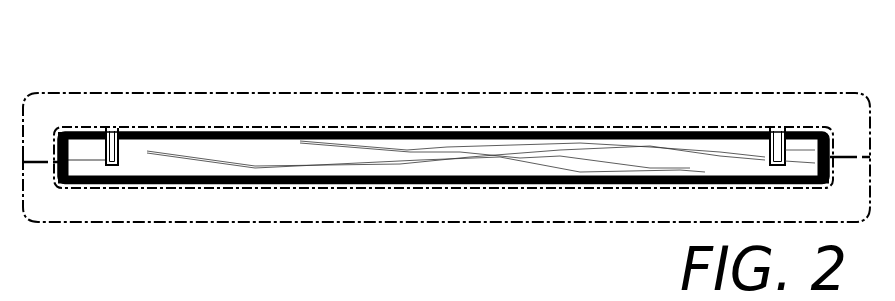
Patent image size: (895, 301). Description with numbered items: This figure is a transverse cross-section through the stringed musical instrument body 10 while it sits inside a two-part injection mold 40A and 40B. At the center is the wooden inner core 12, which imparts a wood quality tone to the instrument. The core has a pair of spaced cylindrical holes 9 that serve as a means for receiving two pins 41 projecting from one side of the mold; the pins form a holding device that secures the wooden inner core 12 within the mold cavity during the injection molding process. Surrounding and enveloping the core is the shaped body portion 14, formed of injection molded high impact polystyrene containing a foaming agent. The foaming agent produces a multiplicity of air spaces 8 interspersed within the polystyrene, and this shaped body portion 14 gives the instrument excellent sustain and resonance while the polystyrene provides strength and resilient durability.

The injection mold part 40A is at (137, 95).
The injection mold part 40B is at (120, 222).
The stringed musical instrument body 10 is at (232, 136).
The shaped body portion 14 is at (395, 132).
The air spaces 8 is at (582, 132).
The pins 41 is at (110, 153).
The cylindrical holes 9 is at (120, 165).
The wooden inner core 12 is at (465, 167).